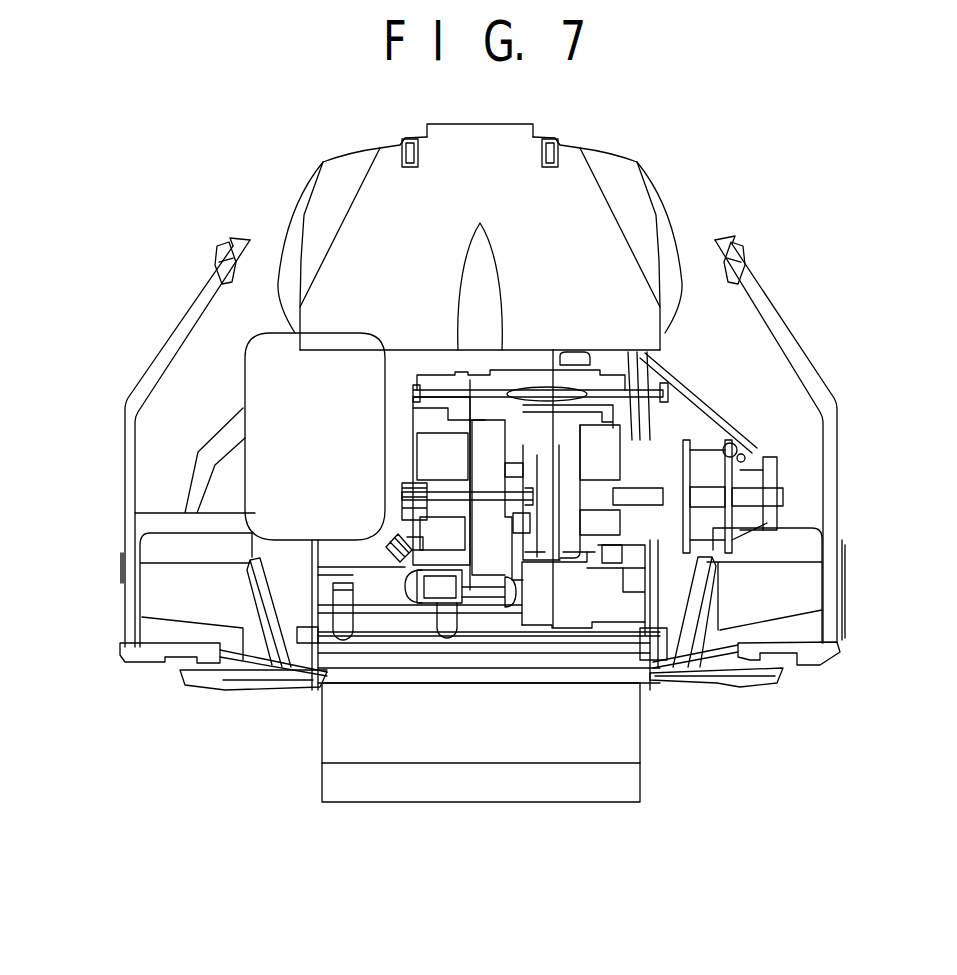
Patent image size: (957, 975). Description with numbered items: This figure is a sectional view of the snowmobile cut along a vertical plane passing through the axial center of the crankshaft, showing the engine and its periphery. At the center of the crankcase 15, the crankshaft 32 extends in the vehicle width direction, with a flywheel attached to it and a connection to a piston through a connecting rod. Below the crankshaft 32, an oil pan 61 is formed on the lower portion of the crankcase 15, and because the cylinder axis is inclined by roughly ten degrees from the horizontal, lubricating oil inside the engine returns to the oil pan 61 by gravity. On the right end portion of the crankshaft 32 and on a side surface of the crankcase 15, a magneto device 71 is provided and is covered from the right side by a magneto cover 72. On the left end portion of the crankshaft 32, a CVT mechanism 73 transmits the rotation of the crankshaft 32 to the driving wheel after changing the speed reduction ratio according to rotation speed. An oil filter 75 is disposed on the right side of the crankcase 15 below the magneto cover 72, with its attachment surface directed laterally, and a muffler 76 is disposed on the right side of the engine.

The crankcase 15 is at (528, 360).
The crankshaft 32 is at (593, 495).
The oil pan 61 is at (573, 613).
The magneto device 71 is at (425, 452).
The magneto cover 72 is at (401, 437).
The CVT mechanism 73 is at (712, 442).
The oil filter 75 is at (437, 597).
The muffler 76 is at (243, 377).